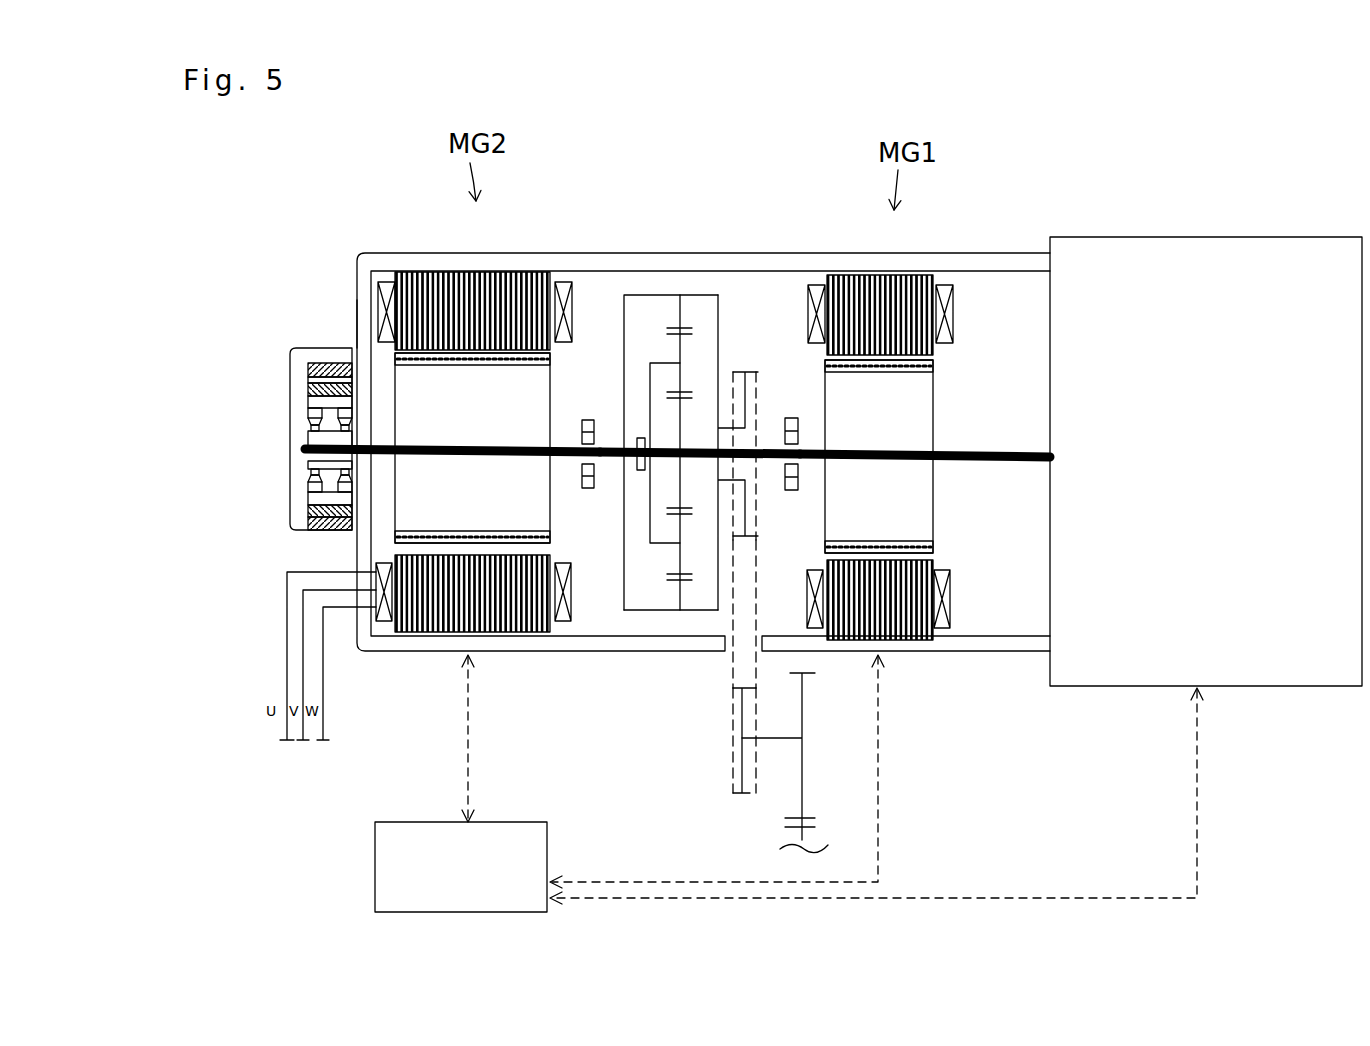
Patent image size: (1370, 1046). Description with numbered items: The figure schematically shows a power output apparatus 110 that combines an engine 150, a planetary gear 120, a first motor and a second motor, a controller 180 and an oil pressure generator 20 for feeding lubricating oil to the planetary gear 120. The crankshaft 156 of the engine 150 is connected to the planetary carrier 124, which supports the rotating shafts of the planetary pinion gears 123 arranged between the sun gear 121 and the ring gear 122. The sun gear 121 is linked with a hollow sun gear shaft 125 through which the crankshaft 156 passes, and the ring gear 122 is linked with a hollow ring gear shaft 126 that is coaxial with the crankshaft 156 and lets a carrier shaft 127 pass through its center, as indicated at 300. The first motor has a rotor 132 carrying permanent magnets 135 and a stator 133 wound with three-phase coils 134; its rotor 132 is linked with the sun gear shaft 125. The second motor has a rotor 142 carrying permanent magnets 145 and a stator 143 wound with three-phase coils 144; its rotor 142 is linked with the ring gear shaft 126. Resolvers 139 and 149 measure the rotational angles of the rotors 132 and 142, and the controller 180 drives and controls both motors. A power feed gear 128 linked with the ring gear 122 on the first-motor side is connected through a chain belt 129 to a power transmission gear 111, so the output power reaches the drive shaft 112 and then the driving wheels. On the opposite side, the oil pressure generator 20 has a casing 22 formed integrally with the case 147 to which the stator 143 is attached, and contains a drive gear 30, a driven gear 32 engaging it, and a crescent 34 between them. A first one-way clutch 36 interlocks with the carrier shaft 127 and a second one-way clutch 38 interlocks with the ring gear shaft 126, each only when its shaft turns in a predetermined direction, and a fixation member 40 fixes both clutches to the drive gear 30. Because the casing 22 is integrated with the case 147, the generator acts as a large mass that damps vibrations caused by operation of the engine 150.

The oil pressure generator 20 is at (308, 333).
The casing 22 is at (297, 345).
The drive gear 30 is at (305, 396).
The driven gear 32 is at (305, 368).
The crescent 34 is at (305, 383).
The first one-way clutch 36 is at (305, 418).
The second one-way clutch 38 is at (300, 430).
The fixation member 40 is at (305, 408).
The power output apparatus 110 is at (840, 130).
The power transmission gear 111 is at (716, 781).
The drive shaft 112 is at (777, 740).
The planetary gear 120 is at (687, 186).
The sun gear 121 is at (695, 410).
The ring gear 122 is at (680, 415).
The planetary pinion gears 123 is at (680, 352).
The planetary carrier 124 is at (630, 440).
The sun gear shaft 125 is at (773, 443).
The ring gear shaft 126 is at (563, 443).
The carrier shaft 127 is at (650, 380).
The power feed gear 128 is at (748, 370).
The chain belt 129 is at (730, 662).
The rotor 132 is at (937, 402).
The stator 133 is at (913, 280).
The three-phase coils 134 is at (955, 300).
The permanent magnets 135 is at (937, 367).
The resolver 139 is at (793, 417).
The rotor 142 is at (487, 393).
The stator 143 is at (440, 272).
The three-phase coils 144 is at (383, 280).
The permanent magnets 145 is at (398, 358).
The case 147 is at (352, 323).
The resolver 149 is at (588, 490).
The engine 150 is at (1163, 237).
The crankshaft 156 is at (968, 462).
The controller 180 is at (375, 838).
The carrier shaft passing through ring gear shaft 300 is at (640, 470).